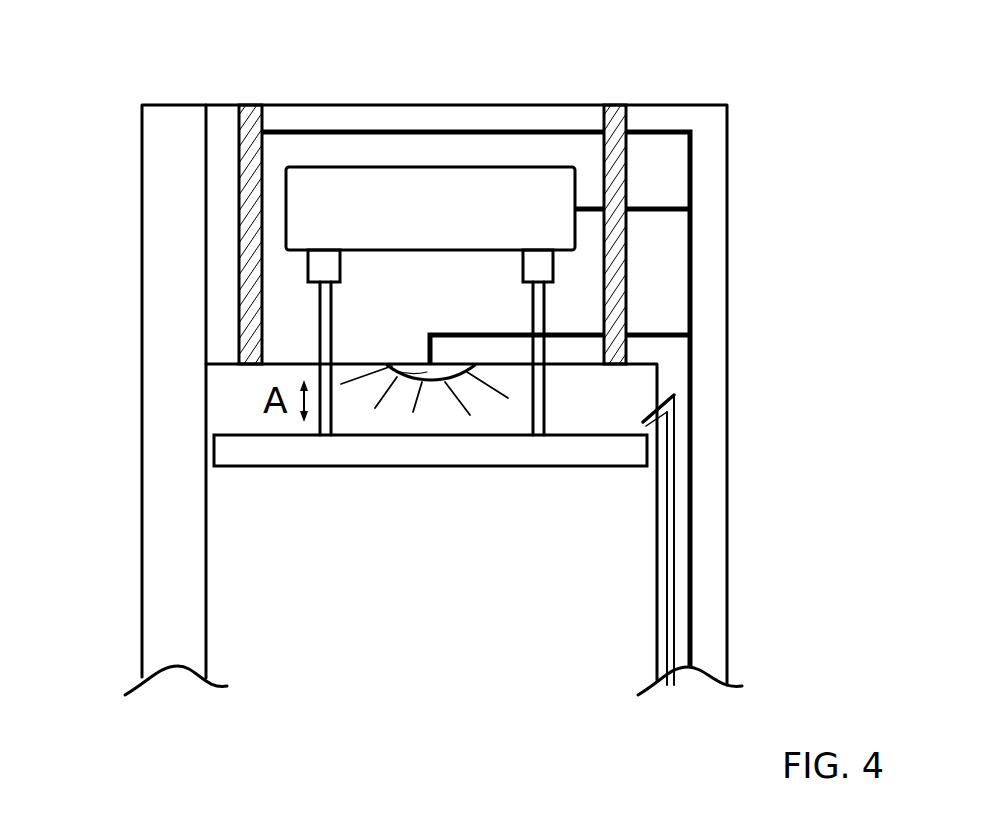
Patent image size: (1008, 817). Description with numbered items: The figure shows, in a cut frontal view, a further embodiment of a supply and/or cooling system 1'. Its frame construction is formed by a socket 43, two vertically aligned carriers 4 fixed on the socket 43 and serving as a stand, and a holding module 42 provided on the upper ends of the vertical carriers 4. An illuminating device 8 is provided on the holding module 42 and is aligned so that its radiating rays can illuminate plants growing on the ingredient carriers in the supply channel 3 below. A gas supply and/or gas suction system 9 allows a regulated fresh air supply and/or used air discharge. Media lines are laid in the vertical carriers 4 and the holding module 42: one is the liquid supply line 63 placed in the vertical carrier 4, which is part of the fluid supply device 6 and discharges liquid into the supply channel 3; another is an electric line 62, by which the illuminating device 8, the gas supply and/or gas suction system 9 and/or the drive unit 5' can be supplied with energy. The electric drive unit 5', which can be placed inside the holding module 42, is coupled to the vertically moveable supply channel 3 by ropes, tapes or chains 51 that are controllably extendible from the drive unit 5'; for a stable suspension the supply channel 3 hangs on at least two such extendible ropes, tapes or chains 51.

The supply and/or cooling system 1' is at (783, 45).
The supply channel 3 is at (420, 453).
The vertical carrier 4 is at (182, 552).
The holding module 42 is at (182, 165).
The socket 43 is at (436, 86).
The electric drive unit 5' is at (557, 190).
The ropes, tapes or chains 51 is at (540, 315).
The fluid supply device 6 is at (667, 413).
The electric line 62 is at (693, 378).
The liquid supply line 63 is at (675, 485).
The illuminating device 8 is at (355, 362).
The gas supply and/or gas suction system 9 is at (617, 240).